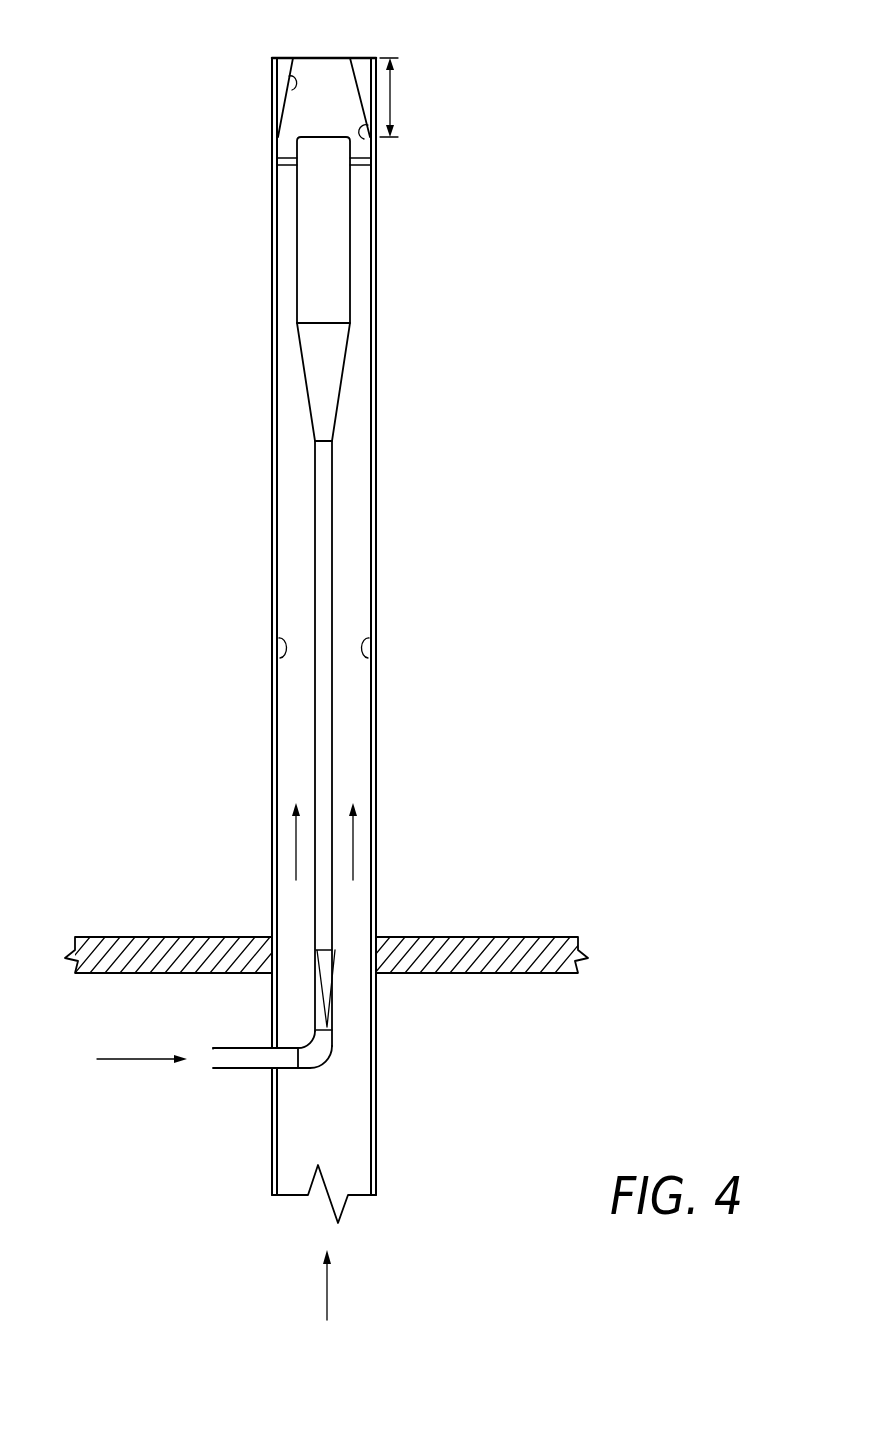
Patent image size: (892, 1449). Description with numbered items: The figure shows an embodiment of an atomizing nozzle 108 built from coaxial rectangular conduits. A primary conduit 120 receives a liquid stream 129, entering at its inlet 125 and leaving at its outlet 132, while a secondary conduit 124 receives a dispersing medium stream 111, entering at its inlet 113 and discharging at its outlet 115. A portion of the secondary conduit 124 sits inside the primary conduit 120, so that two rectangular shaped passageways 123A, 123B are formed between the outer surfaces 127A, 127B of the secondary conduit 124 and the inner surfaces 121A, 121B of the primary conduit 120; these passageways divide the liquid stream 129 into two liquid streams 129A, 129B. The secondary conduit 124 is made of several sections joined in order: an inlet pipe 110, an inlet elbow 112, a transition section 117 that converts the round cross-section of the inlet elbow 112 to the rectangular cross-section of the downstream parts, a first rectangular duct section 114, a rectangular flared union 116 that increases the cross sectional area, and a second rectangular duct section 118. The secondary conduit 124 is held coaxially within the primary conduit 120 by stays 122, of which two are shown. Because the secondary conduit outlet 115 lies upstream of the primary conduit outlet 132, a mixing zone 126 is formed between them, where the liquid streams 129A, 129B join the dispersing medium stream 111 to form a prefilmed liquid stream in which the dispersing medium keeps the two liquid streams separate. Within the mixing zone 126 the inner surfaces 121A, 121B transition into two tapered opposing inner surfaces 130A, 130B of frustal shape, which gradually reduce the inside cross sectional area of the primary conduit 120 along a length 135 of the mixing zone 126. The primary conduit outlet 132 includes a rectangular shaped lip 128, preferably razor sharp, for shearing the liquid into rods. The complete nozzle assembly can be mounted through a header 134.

The atomizing nozzle 108 is at (490, 350).
The inlet pipe 110 is at (255, 1062).
The dispersing medium stream 111 is at (108, 1060).
The inlet elbow 112 is at (318, 1054).
The inlet 113 is at (218, 1054).
The first rectangular duct section 114 is at (325, 587).
The outlet 115 is at (316, 134).
The rectangular flared union 116 is at (323, 358).
The transition section 117 is at (337, 995).
The second rectangular duct section 118 is at (340, 232).
The primary conduit 120 is at (378, 780).
The inner surface 121A is at (285, 660).
The inner surface 121B is at (363, 660).
The stay 122 is at (288, 166).
The rectangular shaped passageway 123A is at (297, 712).
The rectangular shaped passageway 123B is at (352, 712).
The secondary conduit 124 is at (313, 517).
The inlet 125 is at (295, 1197).
The mixing zone 126 is at (308, 105).
The outer surface 127A is at (313, 467).
The outer surface 127B is at (333, 467).
The rectangular shaped lip 128 is at (351, 56).
The liquid stream 129 is at (328, 1288).
The liquid stream 129A is at (295, 842).
The liquid stream 129B is at (353, 842).
The tapered opposing inner surface 130A is at (290, 83).
The tapered opposing inner surface 130B is at (363, 139).
The outlet 132 is at (313, 56).
The header 134 is at (118, 937).
The length 135 is at (393, 100).